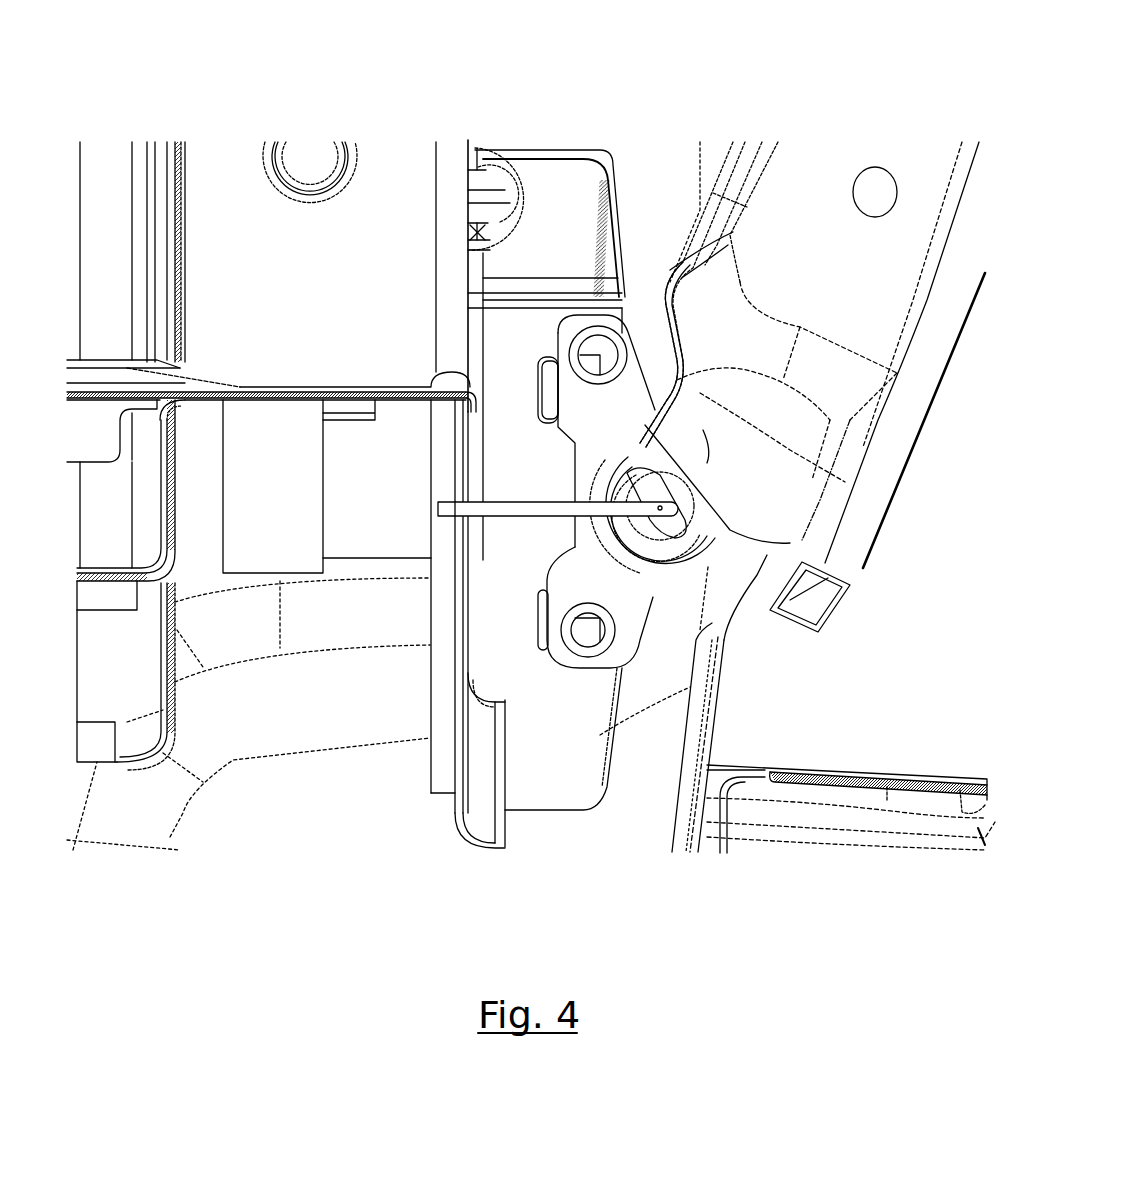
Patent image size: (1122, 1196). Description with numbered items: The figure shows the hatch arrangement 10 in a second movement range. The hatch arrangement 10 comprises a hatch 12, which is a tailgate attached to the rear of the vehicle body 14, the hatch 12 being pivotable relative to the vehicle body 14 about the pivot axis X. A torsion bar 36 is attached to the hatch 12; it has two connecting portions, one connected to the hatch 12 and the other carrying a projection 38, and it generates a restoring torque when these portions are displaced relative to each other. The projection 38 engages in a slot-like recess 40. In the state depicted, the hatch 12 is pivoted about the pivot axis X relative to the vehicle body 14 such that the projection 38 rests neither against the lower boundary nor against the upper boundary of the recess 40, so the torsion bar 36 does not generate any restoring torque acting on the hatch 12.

The hatch arrangement 10 is at (663, 87).
The hatch 12 is at (790, 188).
The vehicle body 14 is at (227, 188).
The torsion bar 36 is at (713, 525).
The projection 38 is at (573, 512).
The recess 40 is at (472, 527).
The pivot axis X is at (678, 514).